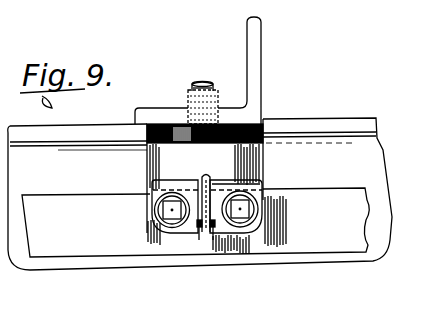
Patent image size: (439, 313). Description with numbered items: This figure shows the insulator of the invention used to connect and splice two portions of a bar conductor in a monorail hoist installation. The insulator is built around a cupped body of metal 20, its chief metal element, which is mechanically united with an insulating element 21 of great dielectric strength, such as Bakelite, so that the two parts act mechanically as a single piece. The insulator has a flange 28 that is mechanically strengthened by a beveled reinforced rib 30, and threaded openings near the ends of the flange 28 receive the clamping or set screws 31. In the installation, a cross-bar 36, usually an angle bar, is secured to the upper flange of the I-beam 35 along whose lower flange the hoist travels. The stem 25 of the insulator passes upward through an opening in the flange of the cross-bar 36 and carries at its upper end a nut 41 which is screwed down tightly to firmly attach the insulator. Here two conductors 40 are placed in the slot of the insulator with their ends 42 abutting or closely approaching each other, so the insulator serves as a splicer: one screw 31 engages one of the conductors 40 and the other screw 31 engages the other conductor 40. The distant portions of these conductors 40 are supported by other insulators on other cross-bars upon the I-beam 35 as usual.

The cupped body of metal 20 is at (143, 163).
The insulating element 21 is at (147, 130).
The stem 25 is at (207, 89).
The flange 28 is at (182, 228).
The beveled reinforced rib 30 is at (198, 226).
The clamping screws 31 is at (163, 212).
The I-beam 35 is at (373, 262).
The cross-bar 36 is at (263, 91).
The conductor bar 40 is at (343, 247).
The nut 41 is at (190, 87).
The ends of the conductors 42 is at (203, 248).